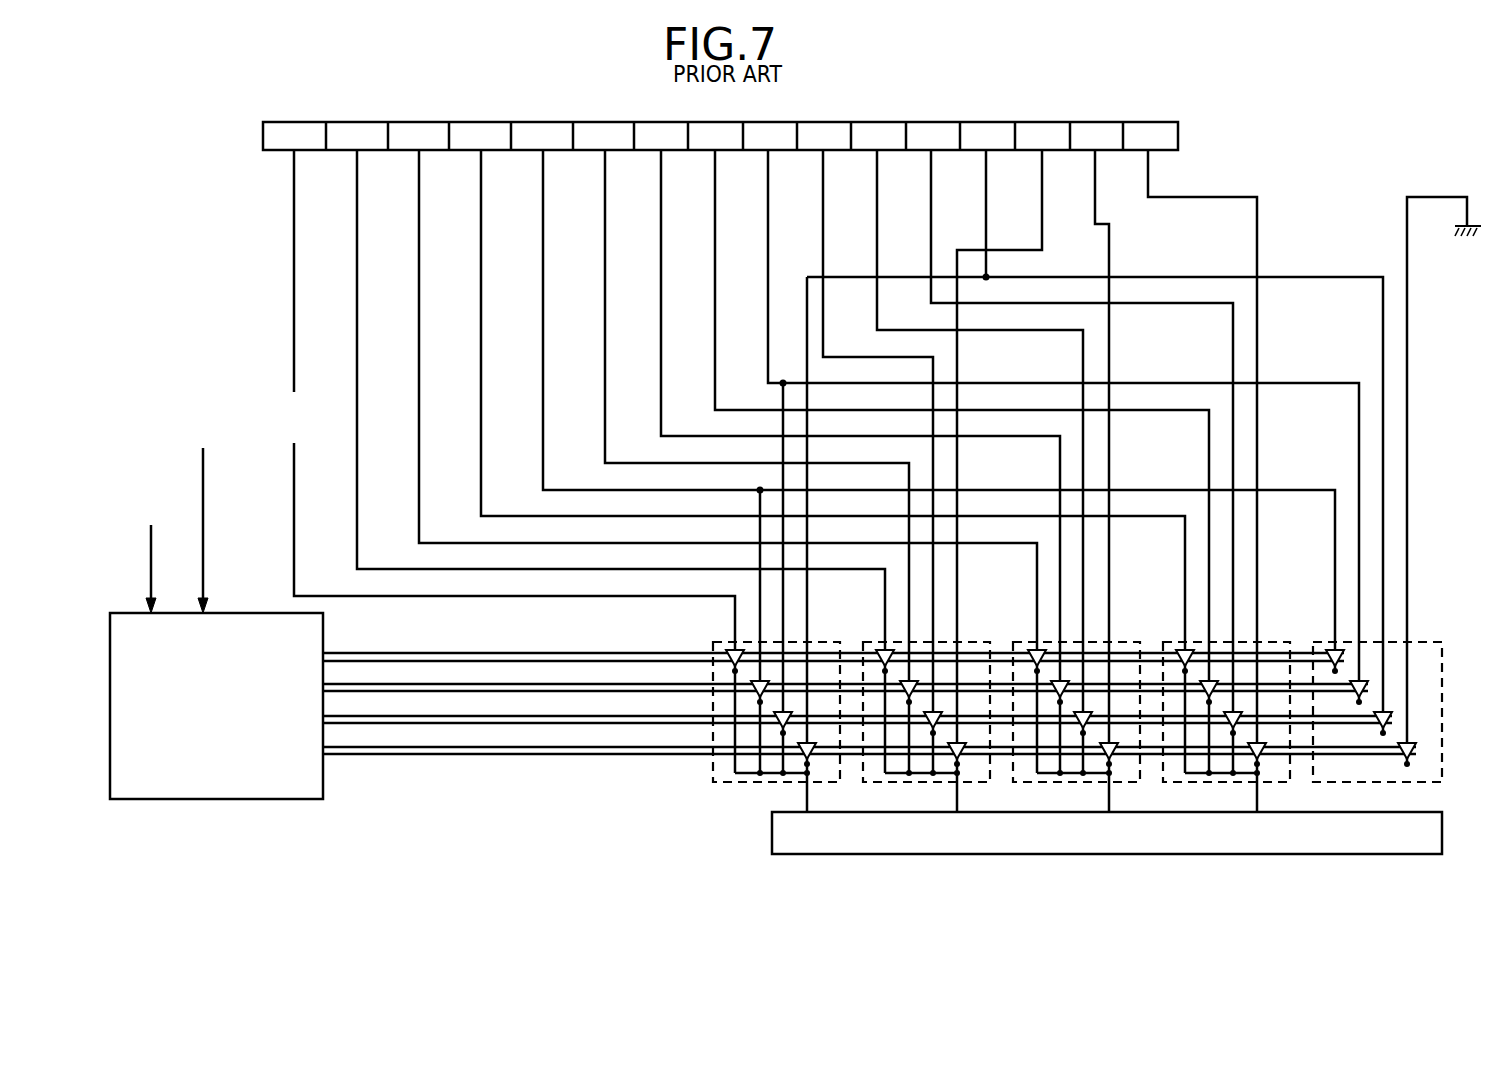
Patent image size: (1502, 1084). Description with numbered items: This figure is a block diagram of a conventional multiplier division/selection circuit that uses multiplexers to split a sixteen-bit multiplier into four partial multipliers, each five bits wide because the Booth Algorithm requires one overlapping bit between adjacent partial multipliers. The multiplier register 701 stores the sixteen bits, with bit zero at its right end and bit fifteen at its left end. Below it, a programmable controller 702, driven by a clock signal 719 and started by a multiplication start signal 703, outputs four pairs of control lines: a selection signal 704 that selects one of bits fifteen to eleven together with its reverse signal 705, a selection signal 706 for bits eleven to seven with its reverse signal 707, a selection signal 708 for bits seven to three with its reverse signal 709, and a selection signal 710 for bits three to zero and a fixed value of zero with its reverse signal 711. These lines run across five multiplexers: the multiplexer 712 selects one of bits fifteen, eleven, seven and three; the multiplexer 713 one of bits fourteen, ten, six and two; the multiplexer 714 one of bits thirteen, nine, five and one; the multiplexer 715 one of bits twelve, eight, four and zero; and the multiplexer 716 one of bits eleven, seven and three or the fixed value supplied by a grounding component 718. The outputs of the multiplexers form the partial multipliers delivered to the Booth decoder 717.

The multiplier register 701 is at (1180, 136).
The programmable controller 702 is at (158, 800).
The multiplication start signal 703 is at (204, 551).
The selection signal 704 is at (335, 652).
The reverse signal 705 is at (355, 660).
The selection signal 706 is at (415, 686).
The reverse signal 707 is at (497, 690).
The selection signal 708 is at (400, 716).
The reverse signal 709 is at (478, 723).
The selection signal 710 is at (565, 748).
The reverse signal 711 is at (643, 755).
The multiplexer 712 is at (813, 641).
The multiplexer 713 is at (968, 641).
The multiplexer 714 is at (1118, 641).
The multiplexer 715 is at (1268, 641).
The multiplexer 716 is at (1418, 641).
The Booth decoder 717 is at (1315, 855).
The grounding component 718 is at (1473, 225).
The clock signal 719 is at (150, 590).